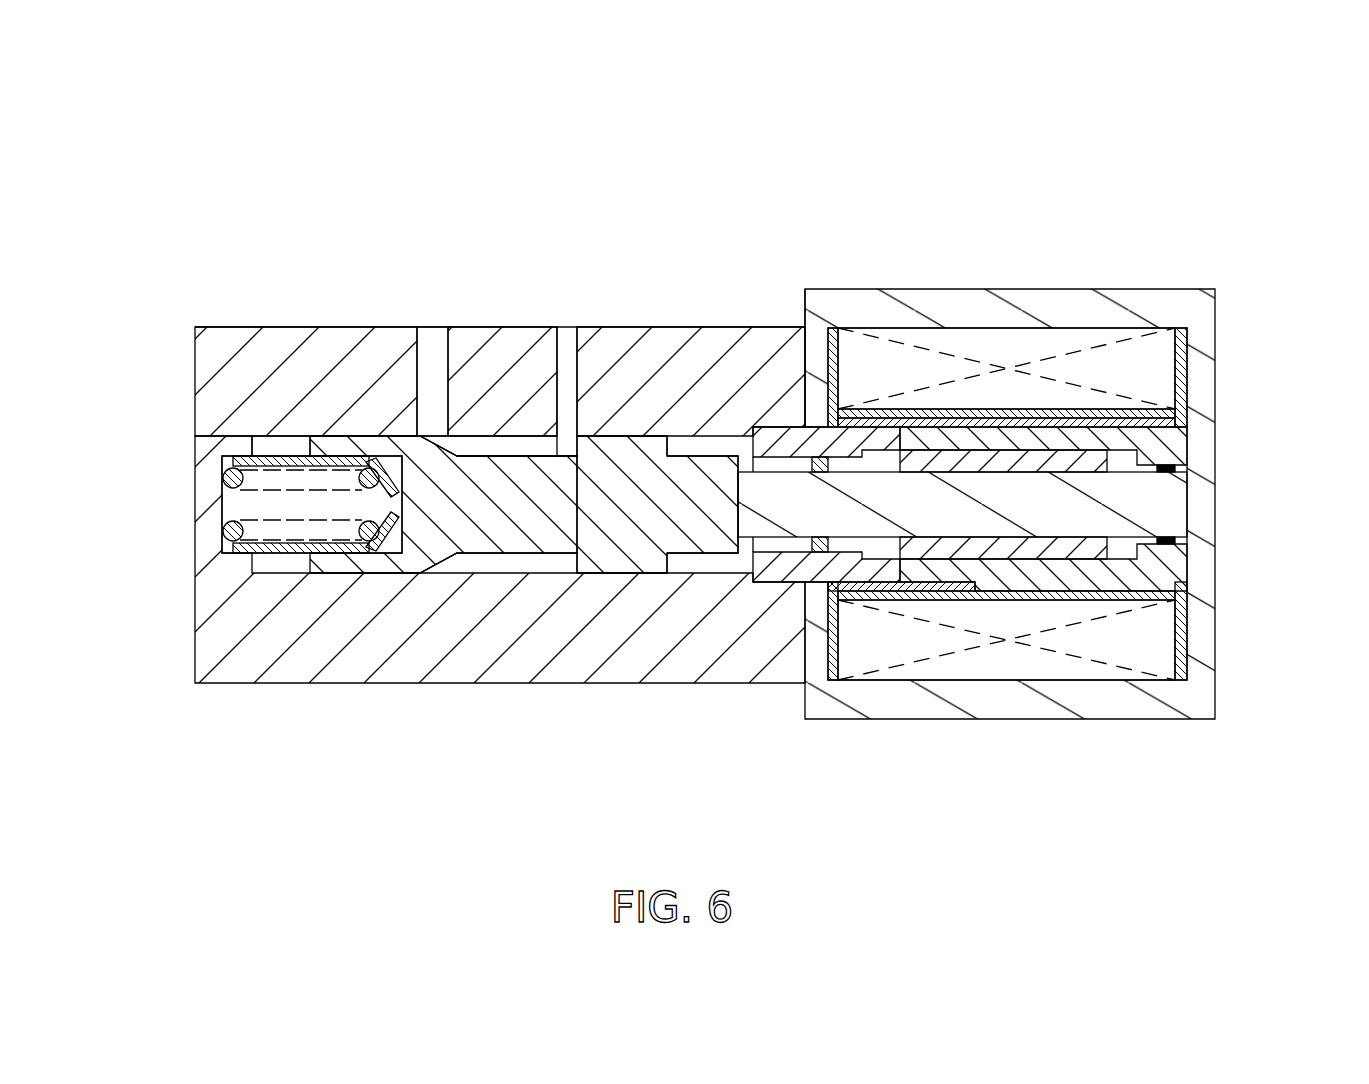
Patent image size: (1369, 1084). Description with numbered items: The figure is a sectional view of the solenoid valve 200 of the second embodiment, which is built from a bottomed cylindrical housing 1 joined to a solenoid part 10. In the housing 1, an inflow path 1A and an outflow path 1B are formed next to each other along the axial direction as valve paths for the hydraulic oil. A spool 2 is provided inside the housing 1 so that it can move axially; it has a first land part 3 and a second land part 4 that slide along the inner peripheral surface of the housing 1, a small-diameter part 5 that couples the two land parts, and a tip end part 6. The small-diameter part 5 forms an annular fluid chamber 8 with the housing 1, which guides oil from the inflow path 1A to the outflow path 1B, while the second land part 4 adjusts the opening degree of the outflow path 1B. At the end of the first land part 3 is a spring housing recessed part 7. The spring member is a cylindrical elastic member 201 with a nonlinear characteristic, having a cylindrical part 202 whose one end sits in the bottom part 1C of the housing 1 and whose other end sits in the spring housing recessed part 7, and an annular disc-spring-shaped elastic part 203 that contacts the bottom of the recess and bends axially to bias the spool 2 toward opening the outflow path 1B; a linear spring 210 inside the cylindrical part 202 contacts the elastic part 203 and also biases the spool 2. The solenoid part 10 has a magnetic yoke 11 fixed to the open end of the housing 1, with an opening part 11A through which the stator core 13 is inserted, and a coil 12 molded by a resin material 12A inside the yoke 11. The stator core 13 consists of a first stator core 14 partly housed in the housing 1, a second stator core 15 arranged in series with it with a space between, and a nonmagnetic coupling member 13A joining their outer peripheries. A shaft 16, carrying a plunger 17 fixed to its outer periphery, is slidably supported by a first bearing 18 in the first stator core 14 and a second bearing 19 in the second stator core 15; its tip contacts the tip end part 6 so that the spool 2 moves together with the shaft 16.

The solenoid valve 200 is at (1252, 139).
The solenoid part 10 is at (1135, 243).
The housing 1 is at (356, 328).
The inflow path 1A is at (433, 352).
The outflow path 1B is at (567, 350).
The bottom part 1C is at (222, 506).
The spring housing recessed part 7 is at (318, 455).
The fluid chamber 8 is at (503, 446).
The spool 2 is at (535, 553).
The first land part 3 is at (312, 553).
The second land part 4 is at (614, 565).
The small-diameter part 5 is at (486, 548).
The tip end part 6 is at (708, 545).
The cylindrical elastic member 201 is at (338, 777).
The cylindrical part 202 is at (357, 556).
The elastic part 203 is at (386, 556).
The linear spring 210 is at (230, 553).
The yoke 11 is at (1078, 315).
The opening part 11A is at (805, 425).
The coil 12 is at (1160, 380).
The resin material 12A is at (1190, 340).
The stator core 13 is at (990, 246).
The coupling member 13A is at (922, 447).
The first stator core 14 is at (868, 437).
The second stator core 15 is at (958, 447).
The shaft 16 is at (1160, 517).
The plunger 17 is at (1020, 540).
The first bearing 18 is at (818, 555).
The second bearing 19 is at (1165, 548).